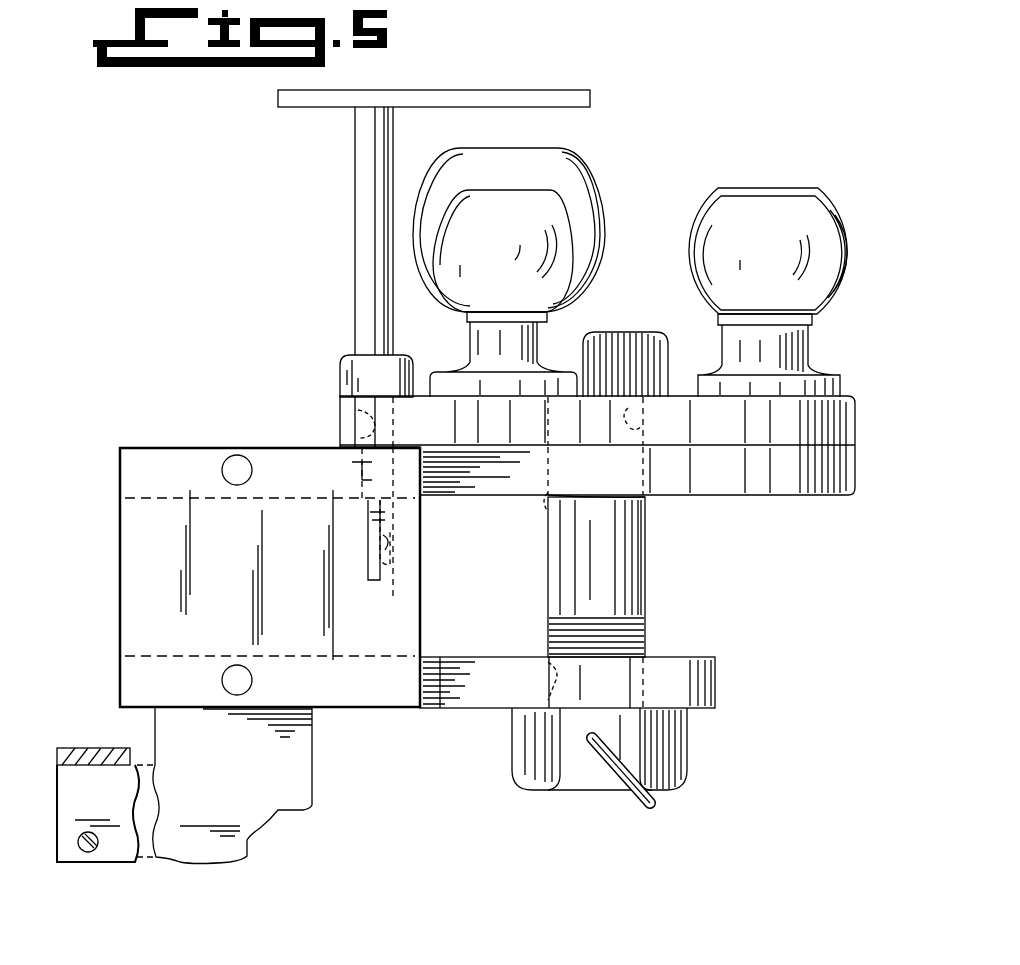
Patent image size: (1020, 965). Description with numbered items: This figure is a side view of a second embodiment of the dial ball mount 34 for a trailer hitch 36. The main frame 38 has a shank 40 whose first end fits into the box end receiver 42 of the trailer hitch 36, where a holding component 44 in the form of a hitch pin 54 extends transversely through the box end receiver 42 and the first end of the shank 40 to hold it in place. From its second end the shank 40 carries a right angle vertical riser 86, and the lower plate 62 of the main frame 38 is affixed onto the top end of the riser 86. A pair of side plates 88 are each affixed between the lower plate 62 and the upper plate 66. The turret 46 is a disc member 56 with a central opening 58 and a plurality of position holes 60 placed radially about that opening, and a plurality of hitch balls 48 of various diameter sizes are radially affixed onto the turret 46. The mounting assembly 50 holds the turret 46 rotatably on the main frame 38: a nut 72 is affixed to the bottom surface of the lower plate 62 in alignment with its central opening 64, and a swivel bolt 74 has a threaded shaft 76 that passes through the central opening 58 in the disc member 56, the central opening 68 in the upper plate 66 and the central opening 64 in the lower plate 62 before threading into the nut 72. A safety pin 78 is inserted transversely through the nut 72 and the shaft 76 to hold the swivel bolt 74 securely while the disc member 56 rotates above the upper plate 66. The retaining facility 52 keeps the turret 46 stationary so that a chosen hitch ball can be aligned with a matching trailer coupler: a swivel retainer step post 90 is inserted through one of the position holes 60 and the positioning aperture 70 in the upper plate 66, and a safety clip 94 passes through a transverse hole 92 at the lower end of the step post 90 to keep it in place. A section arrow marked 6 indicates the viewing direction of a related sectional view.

The section view indicator 6 is at (647, 128).
The dial ball mount 34 is at (281, 345).
The trailer hitch 36 is at (70, 745).
The main frame 38 is at (176, 442).
The shank 40 is at (163, 843).
The box end receiver 42 is at (105, 756).
The holding component 44 is at (98, 852).
The turret 46 is at (862, 408).
The hitch balls 48 is at (778, 202).
The mounting assembly 50 is at (652, 566).
The retaining facility 52 is at (350, 180).
The hitch pin 54 is at (85, 855).
The disc member 56 is at (858, 423).
The central opening 58 is at (655, 423).
The position holes 60 is at (340, 422).
The lower plate 62 is at (717, 680).
The central opening 64 is at (548, 668).
The upper plate 66 is at (858, 470).
The central opening 68 is at (548, 493).
The positioning aperture 70 is at (350, 466).
The nut 72 is at (675, 745).
The swivel bolt 74 is at (622, 345).
The threaded shaft 76 is at (650, 636).
The safety pin 78 is at (650, 803).
The right angle vertical riser 86 is at (312, 740).
The side plates 88 is at (420, 540).
The swivel retainer step post 90 is at (368, 222).
The transverse hole 92 is at (350, 508).
The safety clip 94 is at (389, 561).